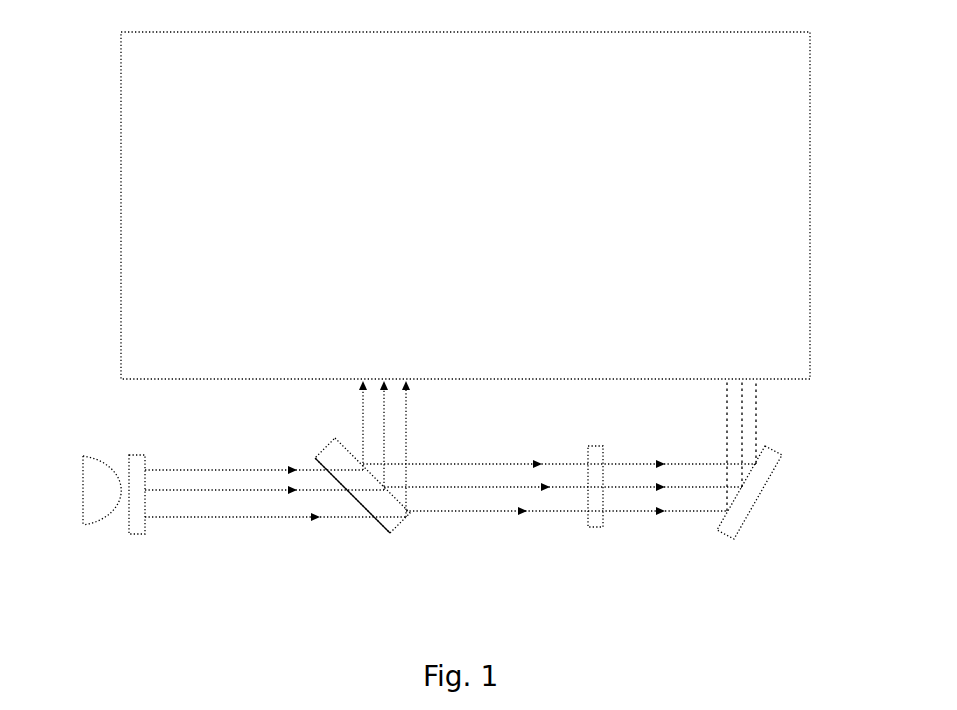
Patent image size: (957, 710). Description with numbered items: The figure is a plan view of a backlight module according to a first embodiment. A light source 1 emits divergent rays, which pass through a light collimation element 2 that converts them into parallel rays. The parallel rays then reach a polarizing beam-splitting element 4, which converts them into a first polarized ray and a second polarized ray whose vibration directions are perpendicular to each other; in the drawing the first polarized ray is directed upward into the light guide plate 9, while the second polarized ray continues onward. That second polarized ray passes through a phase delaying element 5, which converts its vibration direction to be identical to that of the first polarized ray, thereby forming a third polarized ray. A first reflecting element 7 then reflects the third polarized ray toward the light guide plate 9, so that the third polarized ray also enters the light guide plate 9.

The light source 1 is at (83, 492).
The light collimation element 2 is at (145, 525).
The polarizing beam-splitting element 4 is at (390, 533).
The phase delaying element 5 is at (592, 528).
The first reflecting element 7 is at (730, 540).
The light guide plate 9 is at (755, 223).